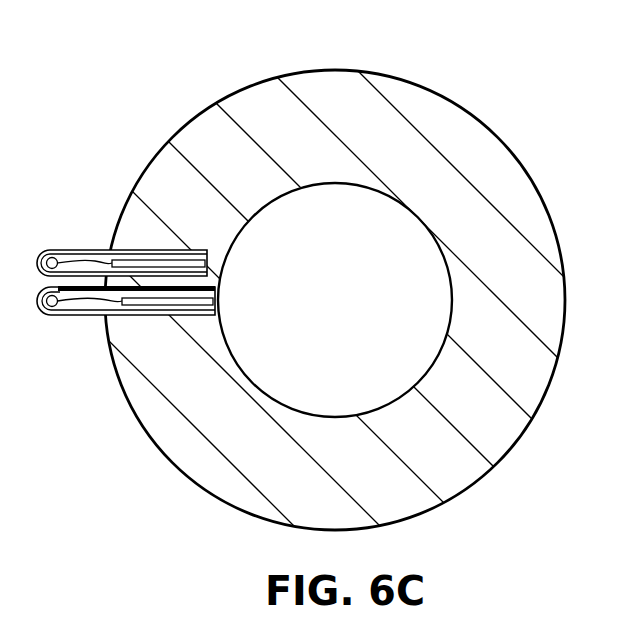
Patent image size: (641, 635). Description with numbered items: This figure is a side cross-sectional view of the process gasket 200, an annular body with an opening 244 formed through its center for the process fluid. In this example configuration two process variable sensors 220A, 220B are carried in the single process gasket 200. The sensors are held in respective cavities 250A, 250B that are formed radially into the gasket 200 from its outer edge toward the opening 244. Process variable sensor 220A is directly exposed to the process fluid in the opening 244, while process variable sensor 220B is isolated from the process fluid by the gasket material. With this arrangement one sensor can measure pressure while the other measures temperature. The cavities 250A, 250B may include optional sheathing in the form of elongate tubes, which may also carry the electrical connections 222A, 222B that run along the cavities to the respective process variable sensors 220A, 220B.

The process gasket 200 is at (453, 103).
The opening 244 is at (353, 308).
The process variable sensor 220A is at (158, 305).
The process variable sensor 220B is at (166, 262).
The cavity 250A is at (108, 314).
The cavity 250B is at (113, 252).
The electrical connection 222A is at (76, 311).
The electrical connection 222B is at (78, 253).